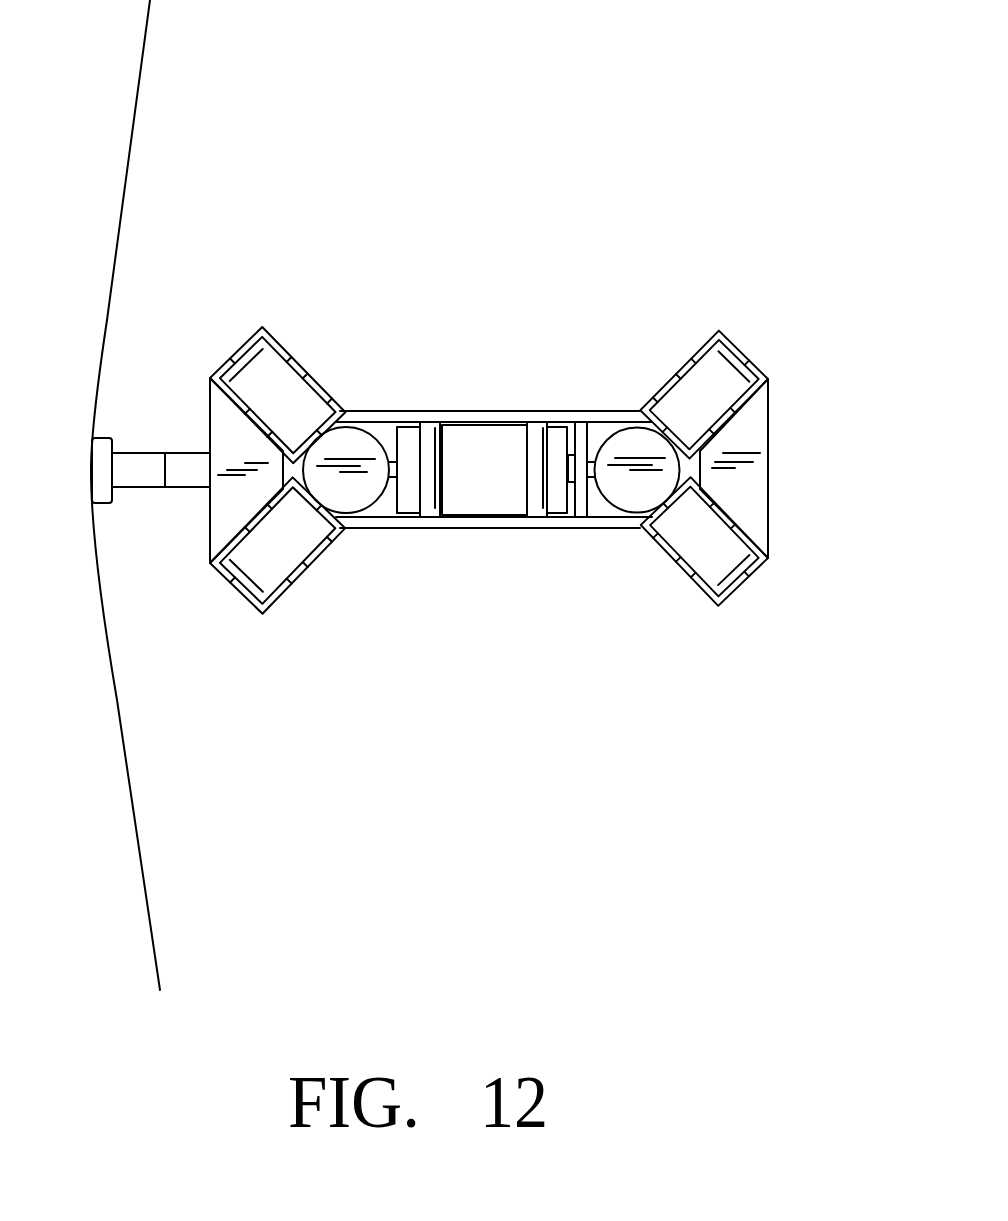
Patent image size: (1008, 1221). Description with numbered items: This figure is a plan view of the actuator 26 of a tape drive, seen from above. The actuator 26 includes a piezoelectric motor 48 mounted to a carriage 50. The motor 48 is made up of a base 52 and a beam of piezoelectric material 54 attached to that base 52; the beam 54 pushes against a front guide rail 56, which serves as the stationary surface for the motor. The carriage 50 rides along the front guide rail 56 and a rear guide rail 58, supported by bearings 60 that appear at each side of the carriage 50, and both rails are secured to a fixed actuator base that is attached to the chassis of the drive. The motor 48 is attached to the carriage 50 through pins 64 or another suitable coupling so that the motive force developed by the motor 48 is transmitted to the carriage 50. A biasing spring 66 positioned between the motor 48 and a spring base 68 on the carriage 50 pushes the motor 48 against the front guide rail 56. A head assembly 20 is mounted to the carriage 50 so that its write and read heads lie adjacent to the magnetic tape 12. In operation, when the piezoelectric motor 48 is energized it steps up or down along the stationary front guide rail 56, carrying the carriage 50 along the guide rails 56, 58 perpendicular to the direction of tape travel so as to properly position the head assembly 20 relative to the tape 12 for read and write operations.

The magnetic tape 12 is at (107, 299).
The head assembly 20 is at (95, 474).
The actuator 26 is at (802, 265).
The piezoelectric motor 48 is at (470, 438).
The carriage 50 is at (218, 427).
The base 52 is at (484, 503).
The beam of piezoelectric material 54 is at (392, 497).
The front guide rail 56 is at (350, 440).
The rear guide rail 58 is at (640, 495).
The bearings 60 is at (236, 368).
The pins 64 is at (432, 474).
The biasing spring 66 is at (570, 503).
The spring base 68 is at (585, 437).